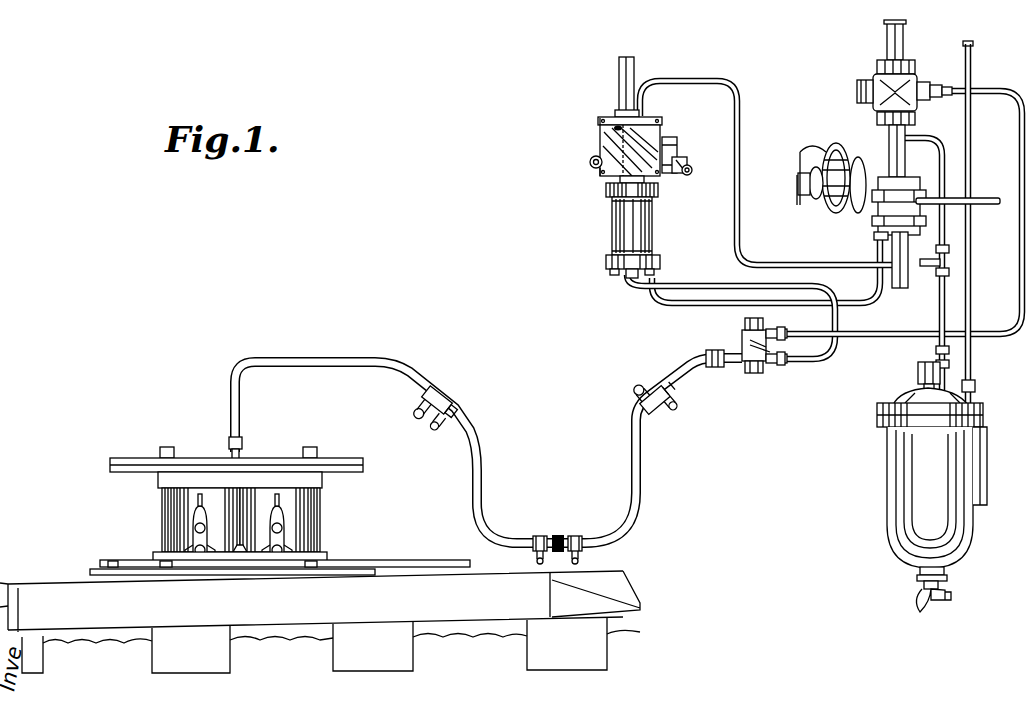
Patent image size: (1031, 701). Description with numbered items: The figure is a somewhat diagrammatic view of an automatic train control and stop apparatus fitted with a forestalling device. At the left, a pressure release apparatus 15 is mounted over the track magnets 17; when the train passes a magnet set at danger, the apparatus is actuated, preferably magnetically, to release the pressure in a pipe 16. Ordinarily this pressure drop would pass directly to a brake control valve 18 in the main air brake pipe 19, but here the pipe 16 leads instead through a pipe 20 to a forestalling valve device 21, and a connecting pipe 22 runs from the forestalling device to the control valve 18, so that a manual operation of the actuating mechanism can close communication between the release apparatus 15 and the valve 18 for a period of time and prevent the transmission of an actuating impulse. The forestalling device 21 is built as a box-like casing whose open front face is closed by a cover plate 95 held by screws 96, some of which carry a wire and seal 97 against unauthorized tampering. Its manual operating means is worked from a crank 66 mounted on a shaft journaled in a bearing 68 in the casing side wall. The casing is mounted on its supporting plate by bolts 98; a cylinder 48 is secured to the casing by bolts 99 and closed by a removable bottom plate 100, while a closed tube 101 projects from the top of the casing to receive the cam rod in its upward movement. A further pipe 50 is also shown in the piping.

The pressure release apparatus 15 is at (162, 515).
The pipe 16 is at (326, 368).
The track magnets 17 is at (320, 622).
The brake control valve 18 is at (824, 213).
The main air brake pipe 19 is at (892, 132).
The pipe 20 is at (670, 303).
The forestalling valve device 21 is at (612, 222).
The connecting pipe 22 is at (725, 312).
The cylinder 48 is at (656, 223).
The pipe 50 is at (737, 253).
The crank 66 is at (681, 154).
The bearing 68 is at (673, 140).
The cover plate 95 is at (650, 136).
The screws 96 is at (602, 117).
The wire and seal 97 is at (615, 130).
The bolts 98 is at (590, 163).
The bolts 99 is at (657, 183).
The bottom plate 100 is at (609, 262).
The closed tube 101 is at (627, 54).